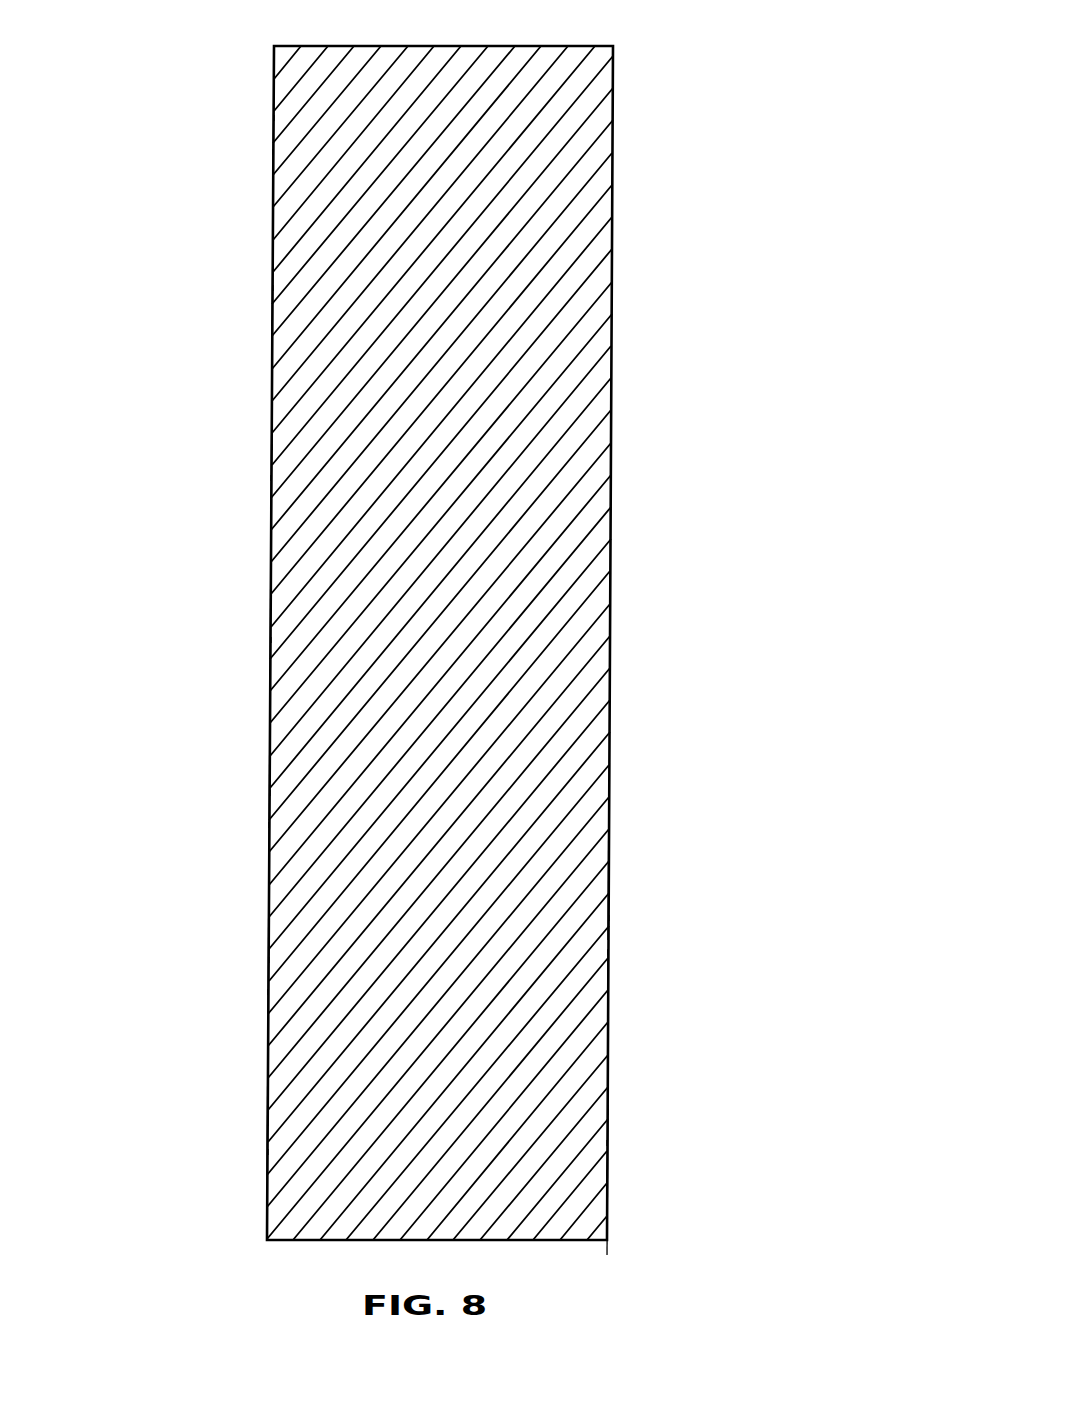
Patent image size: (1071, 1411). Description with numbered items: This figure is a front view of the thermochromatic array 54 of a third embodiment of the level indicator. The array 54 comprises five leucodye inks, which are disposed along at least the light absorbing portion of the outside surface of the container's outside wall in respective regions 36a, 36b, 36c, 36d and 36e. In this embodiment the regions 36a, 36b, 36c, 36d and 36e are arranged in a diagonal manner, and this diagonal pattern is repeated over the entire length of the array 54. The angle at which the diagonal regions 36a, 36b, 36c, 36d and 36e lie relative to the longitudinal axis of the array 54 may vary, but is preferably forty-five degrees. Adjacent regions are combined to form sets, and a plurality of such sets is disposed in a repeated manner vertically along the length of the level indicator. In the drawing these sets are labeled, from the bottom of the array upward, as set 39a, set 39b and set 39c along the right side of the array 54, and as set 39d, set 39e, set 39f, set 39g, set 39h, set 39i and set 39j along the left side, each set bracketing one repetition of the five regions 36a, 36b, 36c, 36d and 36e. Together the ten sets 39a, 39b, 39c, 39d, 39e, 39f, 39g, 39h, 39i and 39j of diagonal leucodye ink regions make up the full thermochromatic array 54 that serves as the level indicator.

The thermochromatic array 54 is at (645, 182).
The region 36a is at (274, 58).
The region 36b is at (274, 88).
The region 36c is at (274, 118).
The region 36d is at (273, 152).
The region 36e is at (273, 185).
The set 39a is at (738, 1105).
The set 39b is at (720, 950).
The set 39c is at (740, 780).
The set 39d is at (135, 1030).
The set 39e is at (114, 860).
The set 39f is at (137, 850).
The set 39g is at (114, 533).
The set 39h is at (140, 378).
The set 39i is at (117, 210).
The set 39j is at (144, 45).